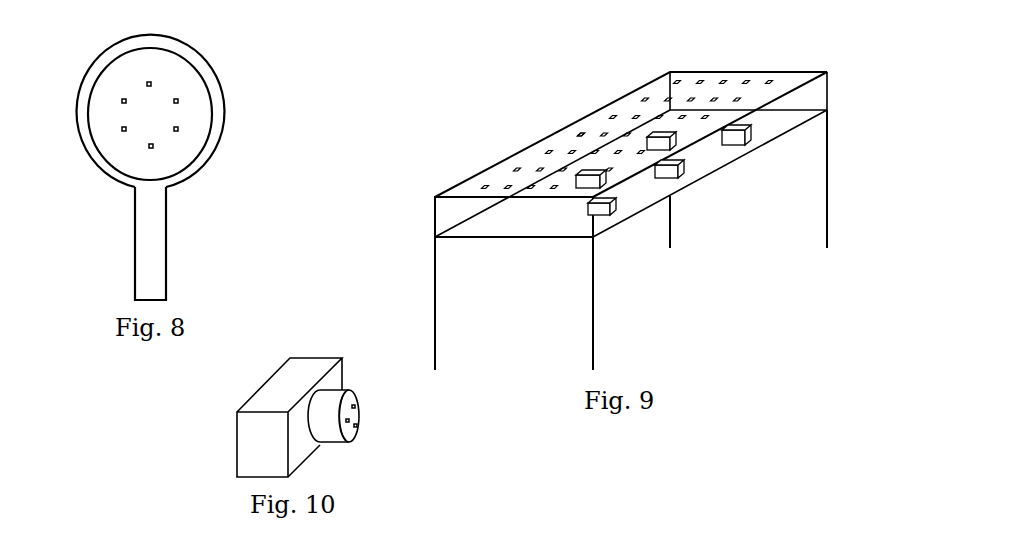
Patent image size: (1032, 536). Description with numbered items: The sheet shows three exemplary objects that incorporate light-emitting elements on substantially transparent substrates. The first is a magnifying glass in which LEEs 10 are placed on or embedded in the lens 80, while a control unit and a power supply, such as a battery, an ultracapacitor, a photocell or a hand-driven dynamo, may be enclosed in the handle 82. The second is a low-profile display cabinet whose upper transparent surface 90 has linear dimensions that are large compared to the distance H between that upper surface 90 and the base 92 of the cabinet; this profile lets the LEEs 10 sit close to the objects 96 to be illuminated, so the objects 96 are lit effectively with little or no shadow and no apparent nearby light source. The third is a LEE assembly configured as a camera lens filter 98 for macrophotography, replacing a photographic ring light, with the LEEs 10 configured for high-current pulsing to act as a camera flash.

In FIG. 8, the light-emitting elements (LEEs) 10 is at (122, 100).
In FIG. 9, the light-emitting elements (LEEs) 10 is at (584, 134).
In FIG. 10, the light-emitting elements (LEEs) 10 is at (356, 408).
In FIG. 8, the lens 80 is at (208, 91).
In FIG. 8, the handle 82 is at (134, 261).
In FIG. 9, the upper transparent surface 90 is at (501, 177).
In FIG. 9, the base 92 is at (516, 226).
In FIG. 9, the objects 96 is at (741, 144).
In FIG. 10, the cylindrical connector 98 is at (350, 441).
In FIG. 9, the distance between the upper surface and the base H is at (415, 197).